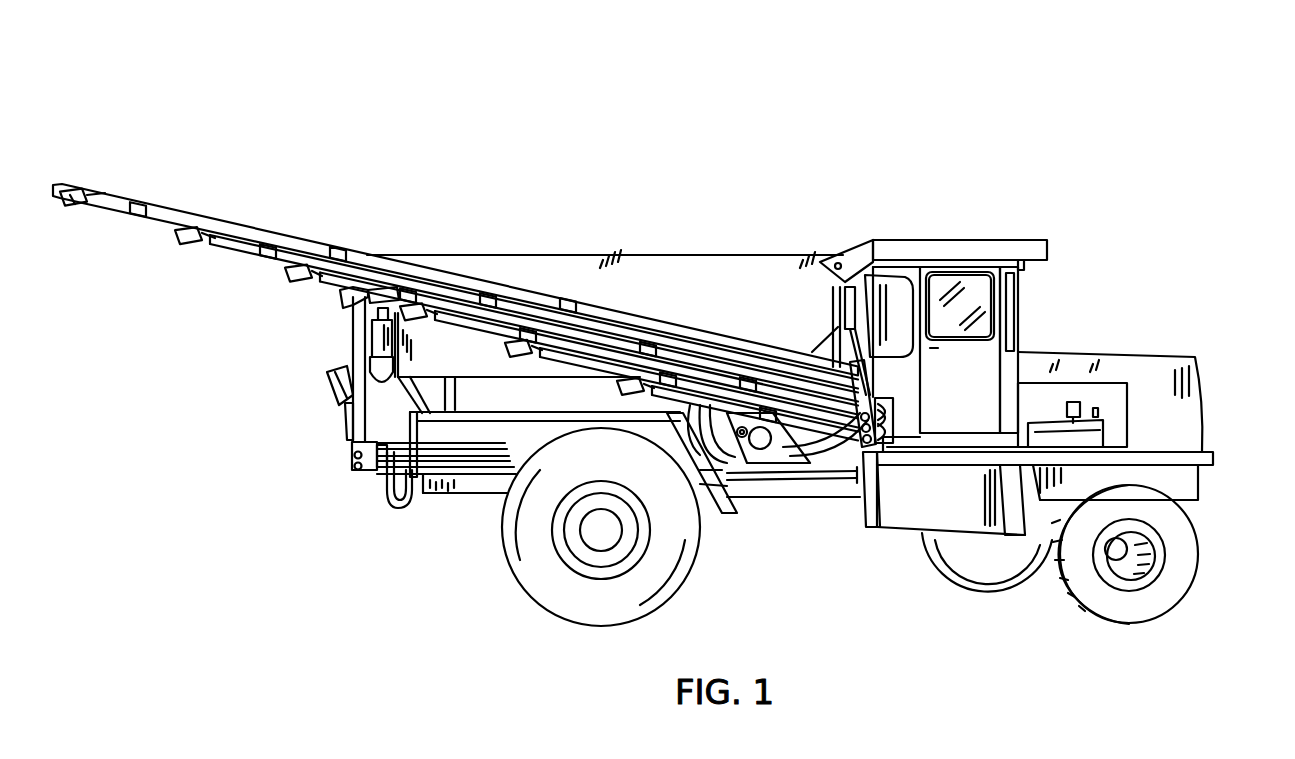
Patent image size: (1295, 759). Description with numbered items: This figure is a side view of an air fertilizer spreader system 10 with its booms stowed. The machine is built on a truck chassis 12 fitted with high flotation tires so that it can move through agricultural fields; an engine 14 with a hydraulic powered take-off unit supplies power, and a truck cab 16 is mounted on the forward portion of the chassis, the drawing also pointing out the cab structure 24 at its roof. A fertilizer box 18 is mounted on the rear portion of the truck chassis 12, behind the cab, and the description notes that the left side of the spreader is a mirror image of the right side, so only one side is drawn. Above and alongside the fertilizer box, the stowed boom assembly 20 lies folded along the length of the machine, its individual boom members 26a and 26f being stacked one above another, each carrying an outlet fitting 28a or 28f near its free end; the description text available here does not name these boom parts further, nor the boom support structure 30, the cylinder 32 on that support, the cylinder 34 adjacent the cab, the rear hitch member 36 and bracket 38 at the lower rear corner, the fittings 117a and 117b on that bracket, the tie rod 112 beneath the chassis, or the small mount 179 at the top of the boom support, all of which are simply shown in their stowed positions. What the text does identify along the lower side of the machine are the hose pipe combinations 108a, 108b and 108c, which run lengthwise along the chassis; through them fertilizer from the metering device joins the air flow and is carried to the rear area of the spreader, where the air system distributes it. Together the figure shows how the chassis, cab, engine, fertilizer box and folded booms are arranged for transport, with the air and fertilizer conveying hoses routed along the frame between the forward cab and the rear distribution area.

The air fertilizer spreader system 10 is at (1098, 92).
The truck chassis 12 is at (1218, 516).
The engine 14 is at (1100, 432).
The truck cab 16 is at (1043, 300).
The fertilizer box 18 is at (652, 257).
The boom assembly 20 is at (680, 316).
The operator cab 24 is at (870, 222).
The boom tube 26a is at (162, 218).
The boom tube 26f is at (688, 402).
The spray nozzle 28a is at (72, 212).
The spray nozzle 28f is at (622, 392).
The boom support mast 30 is at (436, 270).
The hydraulic cylinder 32 is at (372, 340).
The lift cylinder 34 is at (846, 310).
The hitch member 36 is at (300, 381).
The valve bracket 38 is at (352, 444).
The hose pipe combination 108a is at (470, 450).
The hose pipe combination 108b is at (478, 460).
The hose pipe combination 108c is at (500, 475).
The tie rod 112 is at (820, 480).
The valve 117a is at (354, 456).
The valve 117b is at (354, 467).
The mounting bracket 179 is at (383, 294).